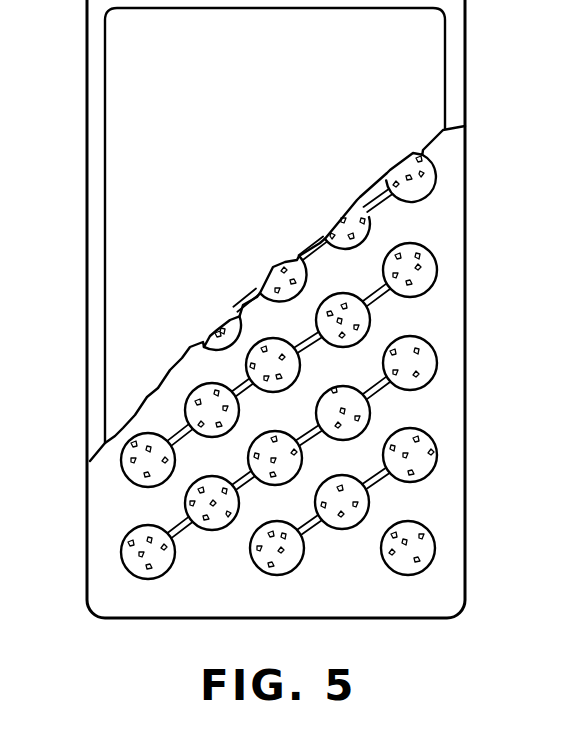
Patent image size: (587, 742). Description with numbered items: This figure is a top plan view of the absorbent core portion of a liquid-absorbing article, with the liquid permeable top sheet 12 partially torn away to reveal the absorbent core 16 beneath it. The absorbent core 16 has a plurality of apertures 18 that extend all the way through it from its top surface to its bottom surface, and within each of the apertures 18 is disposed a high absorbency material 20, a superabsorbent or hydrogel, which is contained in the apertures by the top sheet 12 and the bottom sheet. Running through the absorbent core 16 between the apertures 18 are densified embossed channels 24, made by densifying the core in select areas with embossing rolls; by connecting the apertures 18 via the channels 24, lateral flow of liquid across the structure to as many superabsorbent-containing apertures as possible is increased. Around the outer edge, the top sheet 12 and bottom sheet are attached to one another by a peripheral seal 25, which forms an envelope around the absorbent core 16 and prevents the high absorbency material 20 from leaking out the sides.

The top sheet 12 is at (232, 128).
The absorbent core 16 is at (441, 313).
The apertures 18 is at (372, 232).
The high absorbency material 20 is at (130, 480).
The embossed channels 24 is at (185, 532).
The peripheral seal 25 is at (95, 60).